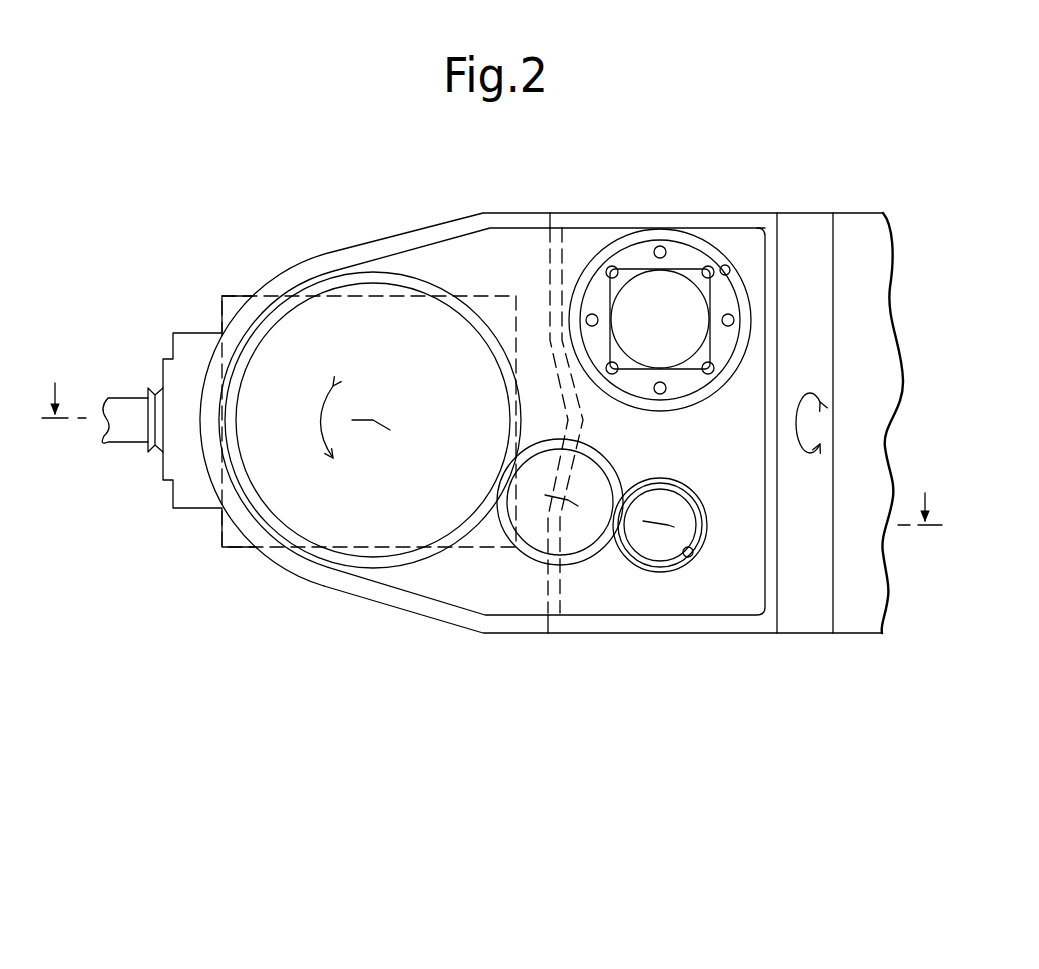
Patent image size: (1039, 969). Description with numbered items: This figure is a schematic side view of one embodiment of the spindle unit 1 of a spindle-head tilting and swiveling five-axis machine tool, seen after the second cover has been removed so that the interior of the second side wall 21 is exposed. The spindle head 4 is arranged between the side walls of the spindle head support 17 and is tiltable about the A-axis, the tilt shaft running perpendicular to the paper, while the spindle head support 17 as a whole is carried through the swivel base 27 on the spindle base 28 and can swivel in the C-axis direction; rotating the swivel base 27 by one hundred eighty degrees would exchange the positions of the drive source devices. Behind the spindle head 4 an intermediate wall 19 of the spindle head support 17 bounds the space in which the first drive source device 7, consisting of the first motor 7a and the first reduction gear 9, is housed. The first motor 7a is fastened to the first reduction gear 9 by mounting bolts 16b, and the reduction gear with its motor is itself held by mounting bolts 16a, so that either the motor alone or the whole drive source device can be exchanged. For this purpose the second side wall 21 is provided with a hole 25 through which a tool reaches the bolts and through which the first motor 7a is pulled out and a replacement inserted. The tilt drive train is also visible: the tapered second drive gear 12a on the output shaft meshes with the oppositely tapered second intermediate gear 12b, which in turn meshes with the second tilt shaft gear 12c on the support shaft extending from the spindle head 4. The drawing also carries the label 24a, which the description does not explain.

The spindle unit 1 is at (221, 646).
The spindle head 4 is at (236, 298).
The first drive source device 7 is at (800, 274).
The first motor 7a is at (683, 303).
The first reduction gear 9 is at (720, 343).
The second drive gear 12a is at (693, 555).
The second intermediate gear 12b is at (542, 538).
The second tilt shaft gear 12c is at (282, 498).
The mounting bolts 16a is at (660, 246).
The mounting bolts 16b is at (704, 268).
The spindle head support 17 is at (428, 614).
The intermediate wall 19 is at (556, 613).
The second side wall 21 is at (486, 258).
The seal ring 24a is at (697, 530).
The hole 25 is at (729, 266).
The swivel base 27 is at (802, 573).
The spindle base 28 is at (870, 364).